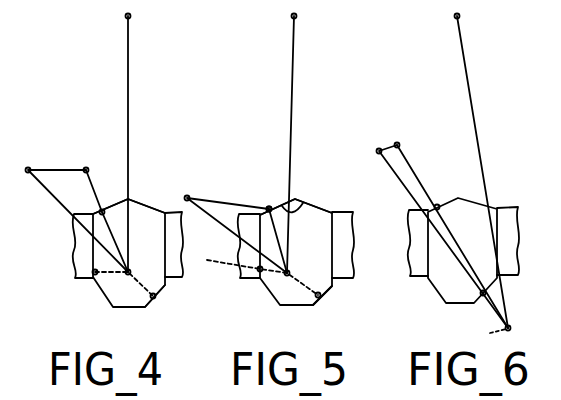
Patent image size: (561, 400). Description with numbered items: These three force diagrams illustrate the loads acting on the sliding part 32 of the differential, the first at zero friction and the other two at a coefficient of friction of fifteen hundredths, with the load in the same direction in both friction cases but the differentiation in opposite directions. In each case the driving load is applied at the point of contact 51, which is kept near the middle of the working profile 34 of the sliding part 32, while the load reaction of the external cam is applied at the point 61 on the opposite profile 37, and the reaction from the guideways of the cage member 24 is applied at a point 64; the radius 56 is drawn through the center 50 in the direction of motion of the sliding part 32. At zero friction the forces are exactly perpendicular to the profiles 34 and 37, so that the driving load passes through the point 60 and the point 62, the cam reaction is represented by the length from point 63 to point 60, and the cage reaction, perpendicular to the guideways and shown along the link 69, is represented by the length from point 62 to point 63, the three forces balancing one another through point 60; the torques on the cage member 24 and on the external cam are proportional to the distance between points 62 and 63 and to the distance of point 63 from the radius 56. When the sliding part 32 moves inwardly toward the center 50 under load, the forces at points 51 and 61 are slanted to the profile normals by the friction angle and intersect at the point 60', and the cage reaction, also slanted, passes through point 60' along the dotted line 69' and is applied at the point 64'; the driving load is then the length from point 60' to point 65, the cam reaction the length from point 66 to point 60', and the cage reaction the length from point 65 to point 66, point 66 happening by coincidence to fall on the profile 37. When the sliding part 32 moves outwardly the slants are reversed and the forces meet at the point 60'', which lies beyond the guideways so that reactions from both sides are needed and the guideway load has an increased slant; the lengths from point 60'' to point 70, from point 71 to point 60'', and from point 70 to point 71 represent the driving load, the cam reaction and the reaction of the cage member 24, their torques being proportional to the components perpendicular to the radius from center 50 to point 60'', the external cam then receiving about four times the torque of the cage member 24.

In FIG. 5, the cage member 24 is at (358, 247).
In FIG. 6, the cage member 24 is at (418, 240).
In FIG. 4, the sliding part 32 is at (118, 285).
In FIG. 5, the sliding part 32 is at (296, 252).
In FIG. 6, the sliding part 32 is at (462, 250).
In FIG. 4, the working profile 34 is at (164, 286).
In FIG. 5, the working profile 34 is at (320, 297).
In FIG. 4, the profile 37 is at (120, 201).
In FIG. 5, the profile 37 is at (301, 203).
In FIG. 4, the center 50 is at (131, 17).
In FIG. 5, the center 50 is at (297, 18).
In FIG. 6, the center 50 is at (460, 18).
In FIG. 4, the point of contact 51 is at (153, 298).
In FIG. 5, the point of contact 51 is at (320, 295).
In FIG. 6, the point of contact 51 is at (483, 295).
In FIG. 4, the radius 56 is at (128, 118).
In FIG. 4, the point 60 is at (128, 272).
In FIG. 5, the point 60' is at (266, 274).
In FIG. 6, the point 60'' is at (524, 323).
In FIG. 4, the point 61 is at (100, 211).
In FIG. 5, the point 61 is at (269, 209).
In FIG. 6, the point 61 is at (452, 200).
In FIG. 4, the point 62 is at (66, 205).
In FIG. 4, the point 63 is at (92, 175).
In FIG. 4, the point 64 is at (82, 291).
In FIG. 5, the point 64' is at (241, 294).
In FIG. 5, the point 65 is at (236, 223).
In FIG. 5, the point 66 is at (266, 208).
In FIG. 4, the link 69 is at (111, 245).
In FIG. 5, the dotted line 69' is at (229, 257).
In FIG. 6, the point 70 is at (430, 233).
In FIG. 6, the point 71 is at (452, 232).